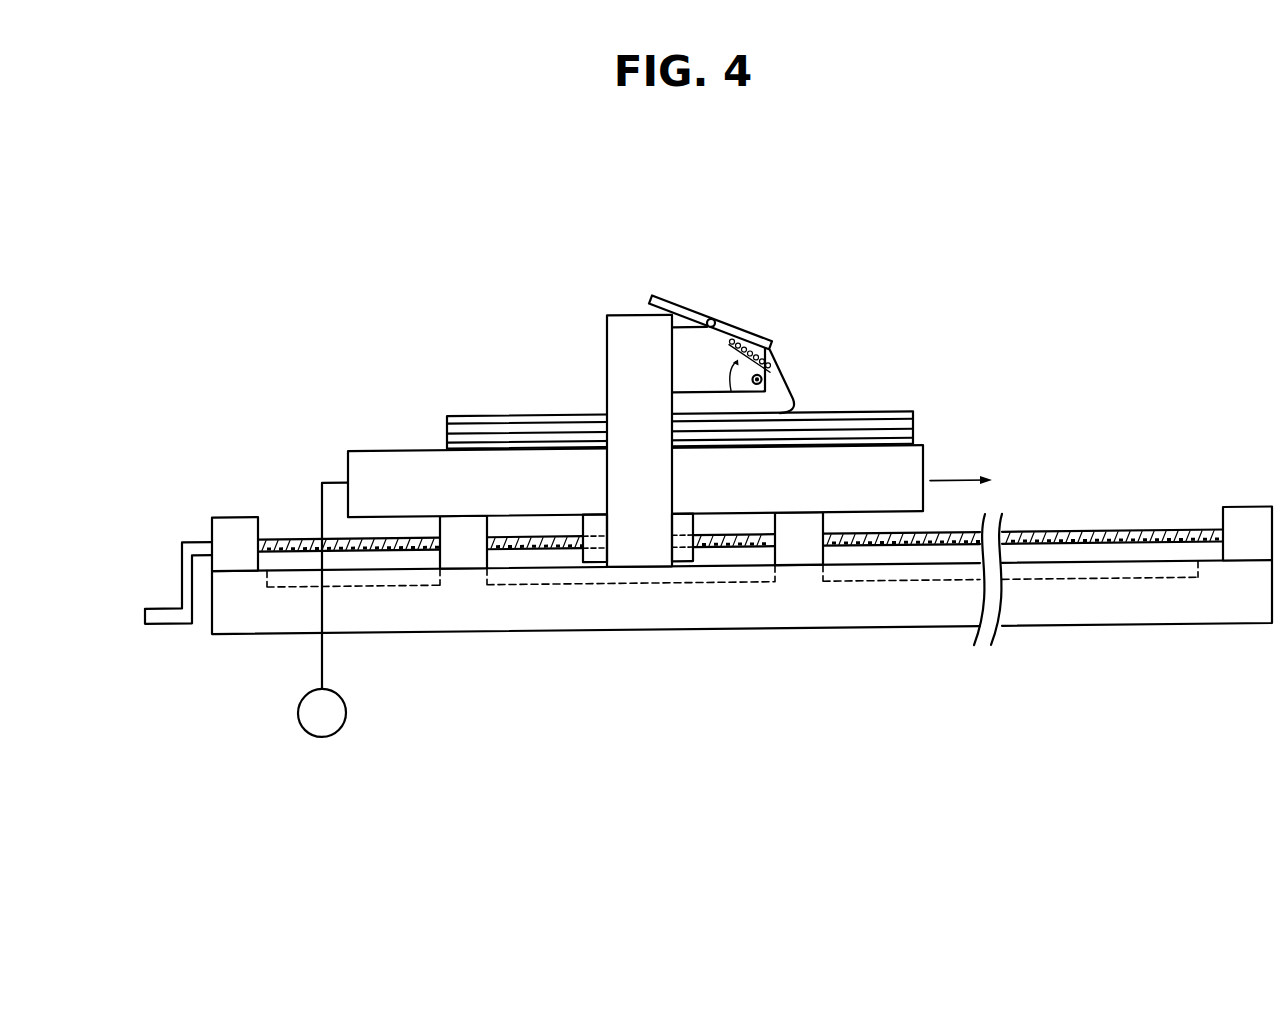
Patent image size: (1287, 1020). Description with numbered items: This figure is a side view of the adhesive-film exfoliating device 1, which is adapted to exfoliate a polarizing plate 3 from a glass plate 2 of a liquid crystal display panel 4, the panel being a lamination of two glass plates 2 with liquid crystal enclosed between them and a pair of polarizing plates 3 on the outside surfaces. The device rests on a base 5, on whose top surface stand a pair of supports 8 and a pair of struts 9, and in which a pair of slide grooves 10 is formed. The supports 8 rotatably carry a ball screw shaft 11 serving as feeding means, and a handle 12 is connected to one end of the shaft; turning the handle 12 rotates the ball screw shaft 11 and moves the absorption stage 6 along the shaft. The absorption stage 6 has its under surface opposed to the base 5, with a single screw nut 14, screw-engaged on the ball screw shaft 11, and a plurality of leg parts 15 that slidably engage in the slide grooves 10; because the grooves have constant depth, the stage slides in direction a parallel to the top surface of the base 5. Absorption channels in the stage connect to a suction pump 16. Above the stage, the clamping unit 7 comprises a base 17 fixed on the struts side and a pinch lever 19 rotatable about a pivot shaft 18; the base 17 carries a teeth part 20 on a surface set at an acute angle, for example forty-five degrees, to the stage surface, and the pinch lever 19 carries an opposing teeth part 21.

The adhesive-film exfoliating device 1 is at (771, 260).
The glass plate 2 is at (448, 438).
The polarizing plate 3 is at (483, 416).
The liquid crystal display panel 4 is at (567, 405).
The base 5 is at (643, 613).
The absorption stage 6 is at (738, 490).
The clamping unit 7 is at (771, 289).
The supports 8 is at (232, 512).
The struts 9 is at (628, 314).
The slide grooves 10 is at (886, 583).
The ball screw shaft 11 is at (1070, 535).
The handle 12 is at (186, 538).
The screw nut 14 is at (590, 554).
The leg parts 15 is at (462, 552).
The suction pump 16 is at (322, 734).
The base 17 is at (683, 306).
The pivot shaft 18 is at (713, 318).
The pinch lever 19 is at (727, 318).
The teeth part 20 is at (763, 382).
The teeth part 21 is at (767, 363).